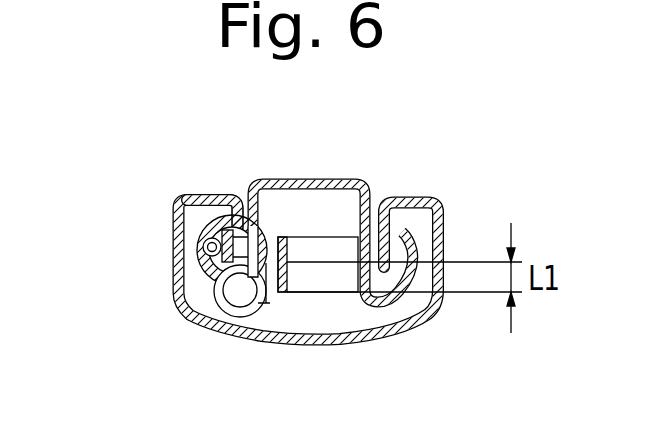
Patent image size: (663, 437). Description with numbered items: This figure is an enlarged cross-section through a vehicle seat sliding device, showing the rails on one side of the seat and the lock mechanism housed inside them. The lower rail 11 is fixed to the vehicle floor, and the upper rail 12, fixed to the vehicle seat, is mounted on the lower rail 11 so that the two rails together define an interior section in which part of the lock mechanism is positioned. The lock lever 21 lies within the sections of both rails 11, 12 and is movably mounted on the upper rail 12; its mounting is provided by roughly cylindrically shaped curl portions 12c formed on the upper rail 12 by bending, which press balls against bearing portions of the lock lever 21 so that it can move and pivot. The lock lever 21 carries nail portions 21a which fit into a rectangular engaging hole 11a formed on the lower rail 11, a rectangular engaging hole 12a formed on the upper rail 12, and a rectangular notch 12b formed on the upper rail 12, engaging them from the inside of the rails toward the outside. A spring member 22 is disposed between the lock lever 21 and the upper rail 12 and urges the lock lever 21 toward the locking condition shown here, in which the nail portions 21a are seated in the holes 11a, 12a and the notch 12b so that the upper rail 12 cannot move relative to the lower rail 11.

The lower rail 11 is at (387, 335).
The engaging hole 11a is at (218, 194).
The upper rail 12 is at (345, 179).
The engaging hole 12a is at (263, 228).
The notch 12b is at (222, 231).
The curl portion 12c is at (227, 304).
The lock lever 21 is at (270, 302).
The nail portion 21a is at (210, 243).
The spring member 22 is at (284, 292).